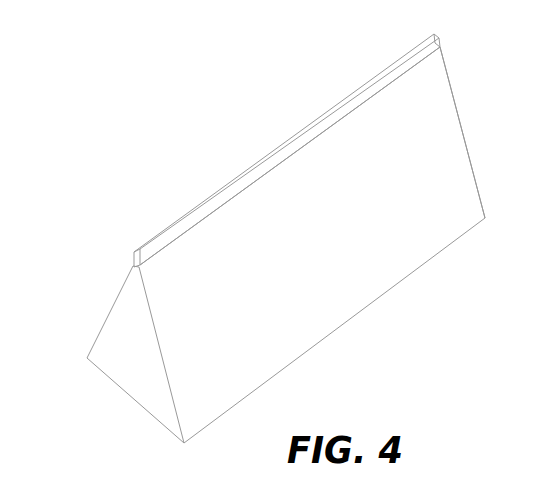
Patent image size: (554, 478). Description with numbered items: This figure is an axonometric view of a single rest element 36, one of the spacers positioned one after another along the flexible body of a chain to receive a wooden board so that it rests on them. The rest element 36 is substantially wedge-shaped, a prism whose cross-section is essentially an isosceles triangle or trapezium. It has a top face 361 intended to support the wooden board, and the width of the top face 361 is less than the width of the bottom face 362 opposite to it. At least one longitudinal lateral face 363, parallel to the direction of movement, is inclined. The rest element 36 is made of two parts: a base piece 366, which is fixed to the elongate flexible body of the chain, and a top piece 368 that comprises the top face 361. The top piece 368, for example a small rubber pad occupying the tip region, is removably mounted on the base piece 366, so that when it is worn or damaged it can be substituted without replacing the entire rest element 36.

The rest element 36 is at (279, 227).
The top face 361 is at (292, 140).
The bottom face 362 is at (135, 400).
The longitudinal lateral face 363 is at (107, 317).
The base piece 366 is at (453, 130).
The top piece 368 is at (343, 98).